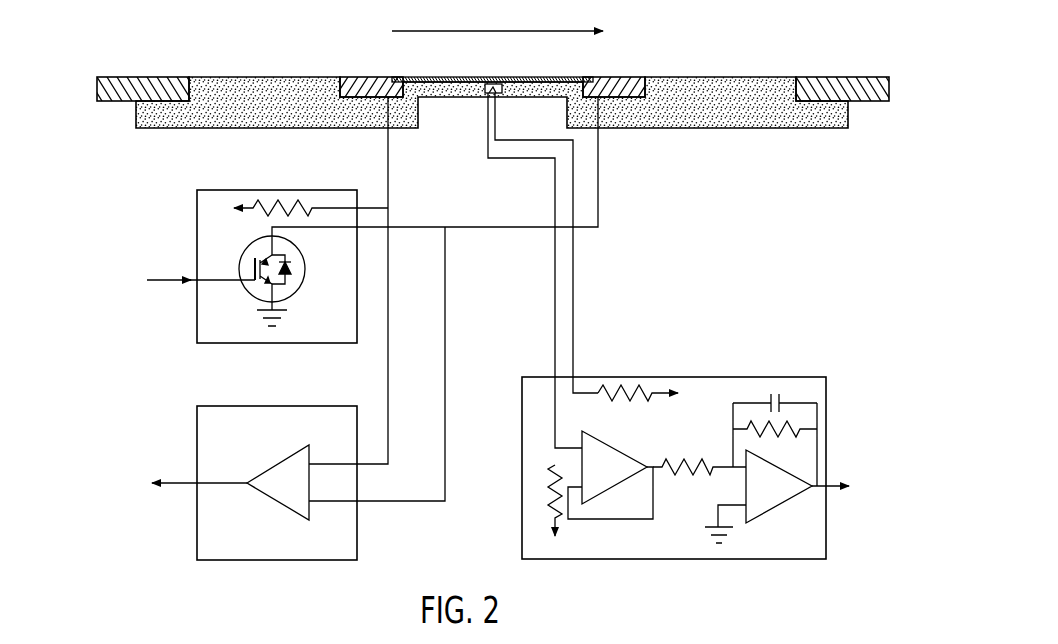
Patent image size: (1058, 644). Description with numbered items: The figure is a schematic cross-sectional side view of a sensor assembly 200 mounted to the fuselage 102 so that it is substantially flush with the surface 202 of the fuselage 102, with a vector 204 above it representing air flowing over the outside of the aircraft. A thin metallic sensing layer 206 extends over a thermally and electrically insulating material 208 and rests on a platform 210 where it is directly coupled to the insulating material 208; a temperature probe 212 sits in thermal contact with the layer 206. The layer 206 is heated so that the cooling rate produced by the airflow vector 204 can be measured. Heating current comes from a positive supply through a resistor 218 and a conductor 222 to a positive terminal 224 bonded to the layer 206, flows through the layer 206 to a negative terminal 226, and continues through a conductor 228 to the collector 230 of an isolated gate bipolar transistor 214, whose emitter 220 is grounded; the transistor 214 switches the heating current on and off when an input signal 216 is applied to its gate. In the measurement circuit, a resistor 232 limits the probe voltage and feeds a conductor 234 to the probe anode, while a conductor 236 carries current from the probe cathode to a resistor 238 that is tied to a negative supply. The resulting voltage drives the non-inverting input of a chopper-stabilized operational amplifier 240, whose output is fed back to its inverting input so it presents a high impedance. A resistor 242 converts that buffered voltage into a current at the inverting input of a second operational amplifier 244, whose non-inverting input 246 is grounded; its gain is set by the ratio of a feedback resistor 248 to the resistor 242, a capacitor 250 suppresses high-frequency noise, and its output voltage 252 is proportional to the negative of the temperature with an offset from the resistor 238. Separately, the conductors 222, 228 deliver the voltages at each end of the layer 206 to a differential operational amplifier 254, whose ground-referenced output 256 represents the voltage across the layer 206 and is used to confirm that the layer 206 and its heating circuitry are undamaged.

The fuselage 102 is at (97, 87).
The sensor assembly 200 is at (864, 44).
The surface 202 is at (168, 77).
The vector 204 is at (493, 28).
The sensing layer 206 is at (443, 77).
The insulating material 208 is at (293, 77).
The platform 210 is at (537, 88).
The temperature probe 212 is at (492, 84).
The isolated gate bipolar transistor 214 is at (292, 296).
The input signal 216 is at (157, 282).
The resistor 218 is at (292, 205).
The emitter 220 is at (252, 296).
The conductor 222 is at (388, 190).
The positive terminal 224 is at (372, 77).
The negative terminal 226 is at (613, 77).
The conductor 228 is at (478, 228).
The collector 230 is at (258, 237).
The resistor 232 is at (633, 383).
The conductor 234 is at (575, 318).
The conductor 236 is at (555, 322).
The resistor 238 is at (552, 480).
The chopper-stabilized operational amplifier 240 is at (617, 447).
The resistor 242 is at (700, 462).
The operational amplifier 244 is at (775, 506).
The non-inverting input 246 is at (714, 521).
The resistor 248 is at (782, 427).
The capacitor 250 is at (771, 400).
The output voltage 252 is at (850, 483).
The differential operational amplifier 254 is at (279, 503).
The output 256 is at (178, 480).